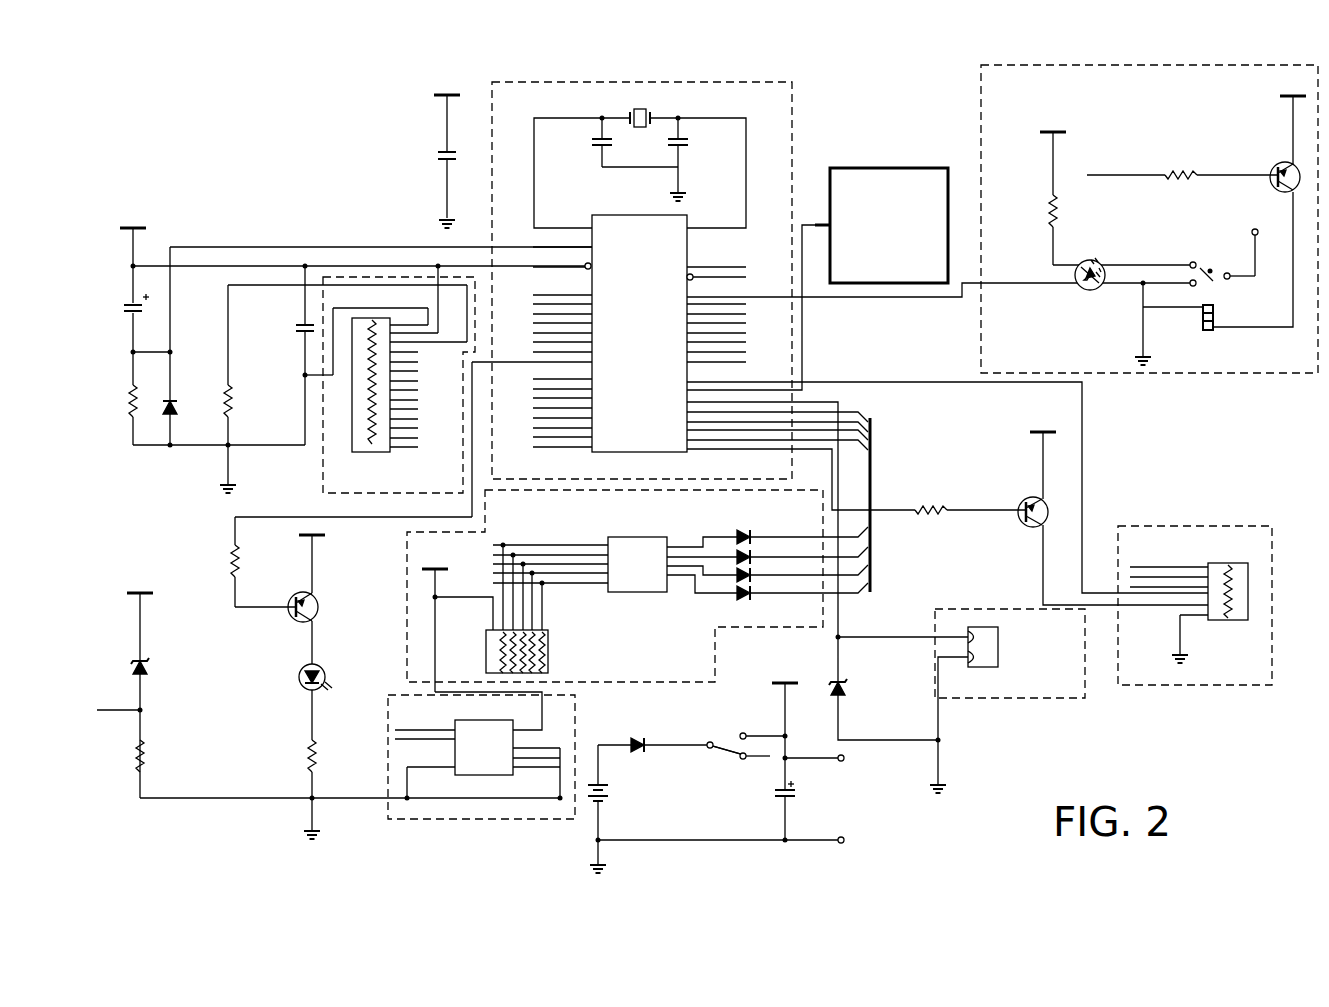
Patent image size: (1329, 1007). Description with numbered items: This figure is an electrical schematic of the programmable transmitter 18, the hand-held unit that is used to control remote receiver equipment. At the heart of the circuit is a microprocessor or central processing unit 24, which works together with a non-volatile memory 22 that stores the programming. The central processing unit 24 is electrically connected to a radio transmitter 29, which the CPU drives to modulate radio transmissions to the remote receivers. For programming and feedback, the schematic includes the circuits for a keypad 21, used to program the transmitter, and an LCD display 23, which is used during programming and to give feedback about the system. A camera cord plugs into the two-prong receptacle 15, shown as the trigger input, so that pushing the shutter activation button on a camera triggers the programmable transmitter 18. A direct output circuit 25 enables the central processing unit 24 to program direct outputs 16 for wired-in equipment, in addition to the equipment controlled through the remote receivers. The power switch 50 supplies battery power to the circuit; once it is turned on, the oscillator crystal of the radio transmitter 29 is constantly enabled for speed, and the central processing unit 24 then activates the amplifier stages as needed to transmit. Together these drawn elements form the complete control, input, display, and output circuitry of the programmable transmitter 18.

The programmable transmitter 18 is at (258, 73).
The central processing unit 24 is at (687, 82).
The direct output circuit 25 is at (1193, 65).
The radio transmitter 29 is at (950, 172).
The LCD display 23 is at (323, 480).
The keypad 21 is at (407, 634).
The non-volatile memory 22 is at (388, 757).
The two-prong receptacle 15 is at (970, 609).
The direct outputs 16 is at (1180, 526).
The power switch 50 is at (734, 760).